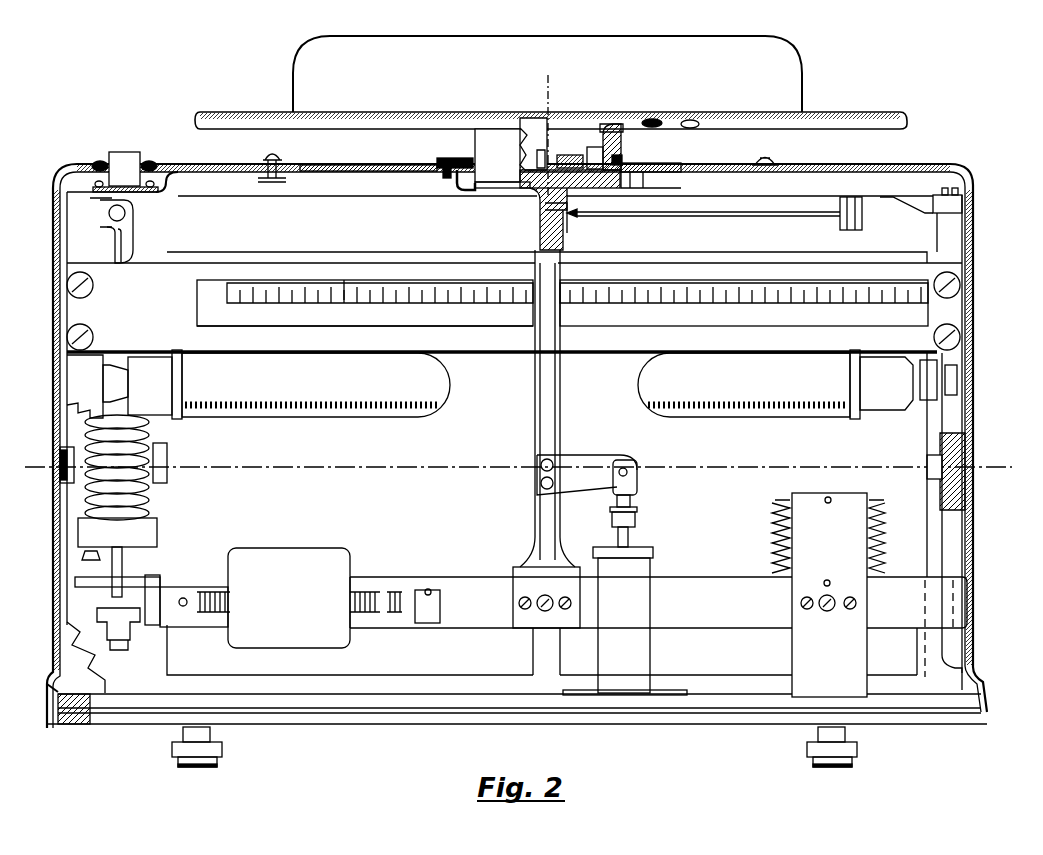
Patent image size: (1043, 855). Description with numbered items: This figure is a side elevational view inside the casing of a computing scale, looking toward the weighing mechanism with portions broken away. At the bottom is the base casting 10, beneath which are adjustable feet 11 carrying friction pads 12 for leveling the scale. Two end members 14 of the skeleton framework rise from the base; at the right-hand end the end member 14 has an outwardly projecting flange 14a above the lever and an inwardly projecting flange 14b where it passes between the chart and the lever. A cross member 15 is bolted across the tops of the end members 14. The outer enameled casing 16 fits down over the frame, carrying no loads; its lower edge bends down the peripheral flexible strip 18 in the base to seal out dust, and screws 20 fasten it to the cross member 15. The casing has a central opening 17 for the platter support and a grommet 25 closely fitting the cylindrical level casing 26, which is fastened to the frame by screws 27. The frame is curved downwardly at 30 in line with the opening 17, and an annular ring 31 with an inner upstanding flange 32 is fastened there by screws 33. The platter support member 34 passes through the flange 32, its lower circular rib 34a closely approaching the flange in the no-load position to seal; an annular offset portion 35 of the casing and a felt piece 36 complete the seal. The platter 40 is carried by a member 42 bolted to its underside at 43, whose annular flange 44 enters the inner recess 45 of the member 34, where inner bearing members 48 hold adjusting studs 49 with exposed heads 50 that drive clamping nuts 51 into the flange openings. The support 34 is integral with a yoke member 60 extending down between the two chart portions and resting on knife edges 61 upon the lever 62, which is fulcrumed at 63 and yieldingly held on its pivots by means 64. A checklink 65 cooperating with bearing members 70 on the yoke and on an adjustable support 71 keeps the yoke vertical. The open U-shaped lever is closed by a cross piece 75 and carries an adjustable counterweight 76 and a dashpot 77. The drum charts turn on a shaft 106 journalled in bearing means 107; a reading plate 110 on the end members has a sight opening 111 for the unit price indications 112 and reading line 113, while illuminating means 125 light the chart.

The base casting 10 is at (313, 726).
The adjustable feet 11 is at (225, 750).
The friction pads 12 is at (210, 766).
The end members 14 is at (80, 370).
The outwardly projecting flange 14a is at (953, 530).
The inwardly projecting flange 14b is at (922, 577).
The cross member 15 is at (205, 176).
The casing 16 is at (172, 168).
The central opening 17 is at (470, 156).
The peripheral flexible strip 18 is at (53, 727).
The screws 20 is at (264, 153).
The grommet 25 is at (97, 160).
The level casing 26 is at (125, 160).
The screws 27 is at (92, 187).
The downwardly curved portion 30 is at (462, 188).
The annular ring 31 is at (645, 180).
The inner upstanding flange 32 is at (622, 160).
The screws 33 is at (445, 177).
The platter support member 34 is at (487, 147).
The lower circular rib 34a is at (498, 190).
The annular offset portion 35 is at (437, 165).
The annular felt piece 36 is at (652, 165).
The platter 40 is at (825, 112).
The platter supporting member 42 is at (648, 120).
The bolting point 43 is at (692, 120).
The annular flange 44 is at (610, 150).
The inner recess 45 is at (535, 128).
The inner bearing members 48 is at (550, 148).
The adjusting stud 49 is at (575, 153).
The exposed head 50 is at (612, 135).
The clamping nut 51 is at (593, 146).
The yoke member 60 is at (545, 405).
The knife edges 61 is at (543, 598).
The lever 62 is at (683, 590).
The fulcrum 63 is at (815, 612).
The retaining means 64 is at (775, 528).
The checklink 65 is at (650, 218).
The bearing members 70 is at (498, 183).
The support 71 is at (865, 207).
The cross piece 75 is at (157, 585).
The adjustable counterweight 76 is at (320, 556).
The dashpot 77 is at (638, 560).
The shaft 106 is at (162, 460).
The bearing means 107 is at (958, 453).
The reading plate 110 is at (100, 297).
The sight opening 111 is at (302, 300).
The unit price indications 112 is at (346, 288).
The reading line 113 is at (512, 310).
The illuminating means 125 is at (356, 390).